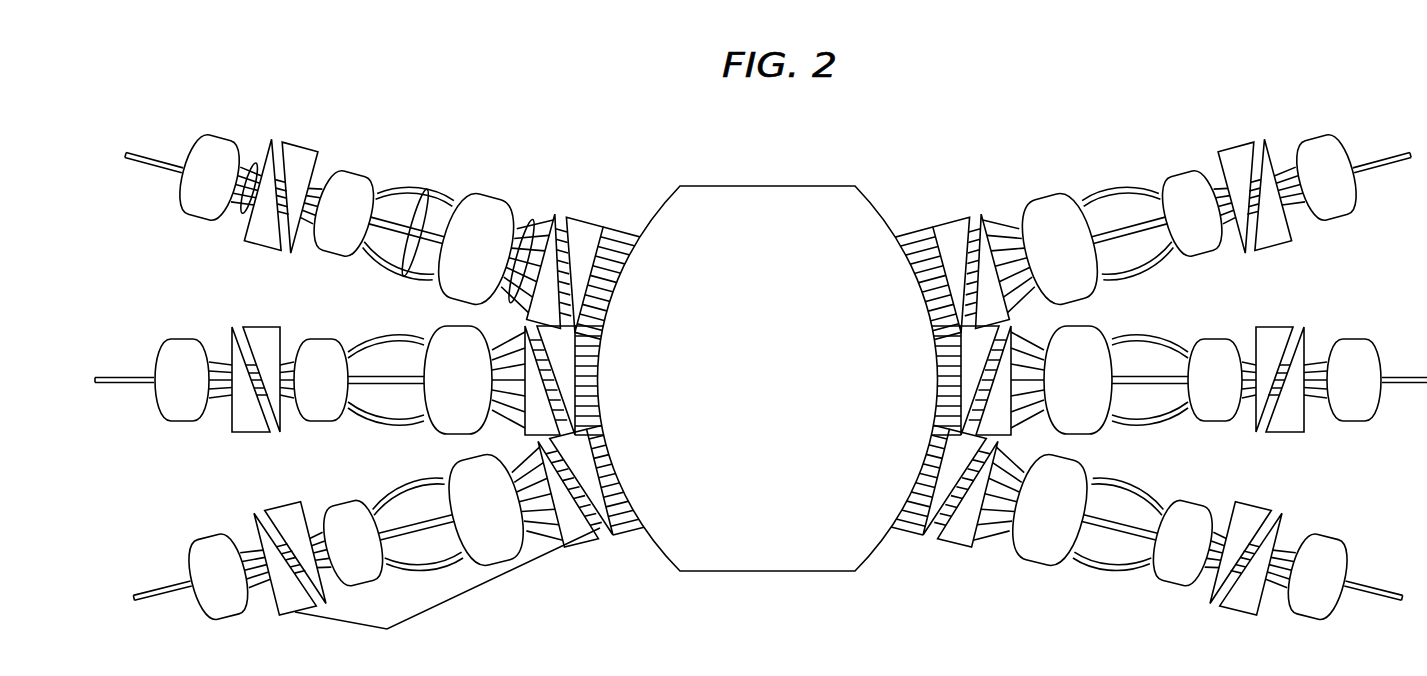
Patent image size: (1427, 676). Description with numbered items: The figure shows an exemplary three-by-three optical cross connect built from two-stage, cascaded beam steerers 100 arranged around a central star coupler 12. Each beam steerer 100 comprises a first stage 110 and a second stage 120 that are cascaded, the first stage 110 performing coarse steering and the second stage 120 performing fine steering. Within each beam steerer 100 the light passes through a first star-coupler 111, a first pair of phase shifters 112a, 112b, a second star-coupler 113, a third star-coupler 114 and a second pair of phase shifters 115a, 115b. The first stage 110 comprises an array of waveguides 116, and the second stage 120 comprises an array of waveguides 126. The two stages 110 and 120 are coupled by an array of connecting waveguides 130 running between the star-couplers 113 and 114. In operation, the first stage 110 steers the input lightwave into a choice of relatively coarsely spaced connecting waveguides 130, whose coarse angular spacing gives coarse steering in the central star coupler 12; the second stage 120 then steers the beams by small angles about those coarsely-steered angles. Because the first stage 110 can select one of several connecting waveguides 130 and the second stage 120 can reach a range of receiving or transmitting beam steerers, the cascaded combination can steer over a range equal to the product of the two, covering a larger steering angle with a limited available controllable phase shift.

The central star coupler 12 is at (777, 186).
The beam steerer 100 is at (418, 199).
The first stage 110 is at (262, 194).
The first star-coupler 111 is at (183, 193).
The phase shifter 112a is at (243, 233).
The phase shifter 112b is at (297, 238).
The second star-coupler 113 is at (357, 192).
The third star-coupler 114 is at (443, 287).
The phase shifter 115a is at (548, 294).
The phase shifter 115b is at (629, 282).
The array of waveguides 116 is at (243, 158).
The second stage 120 is at (598, 256).
The array of waveguides 126 is at (508, 296).
The connecting waveguides 130 is at (425, 188).